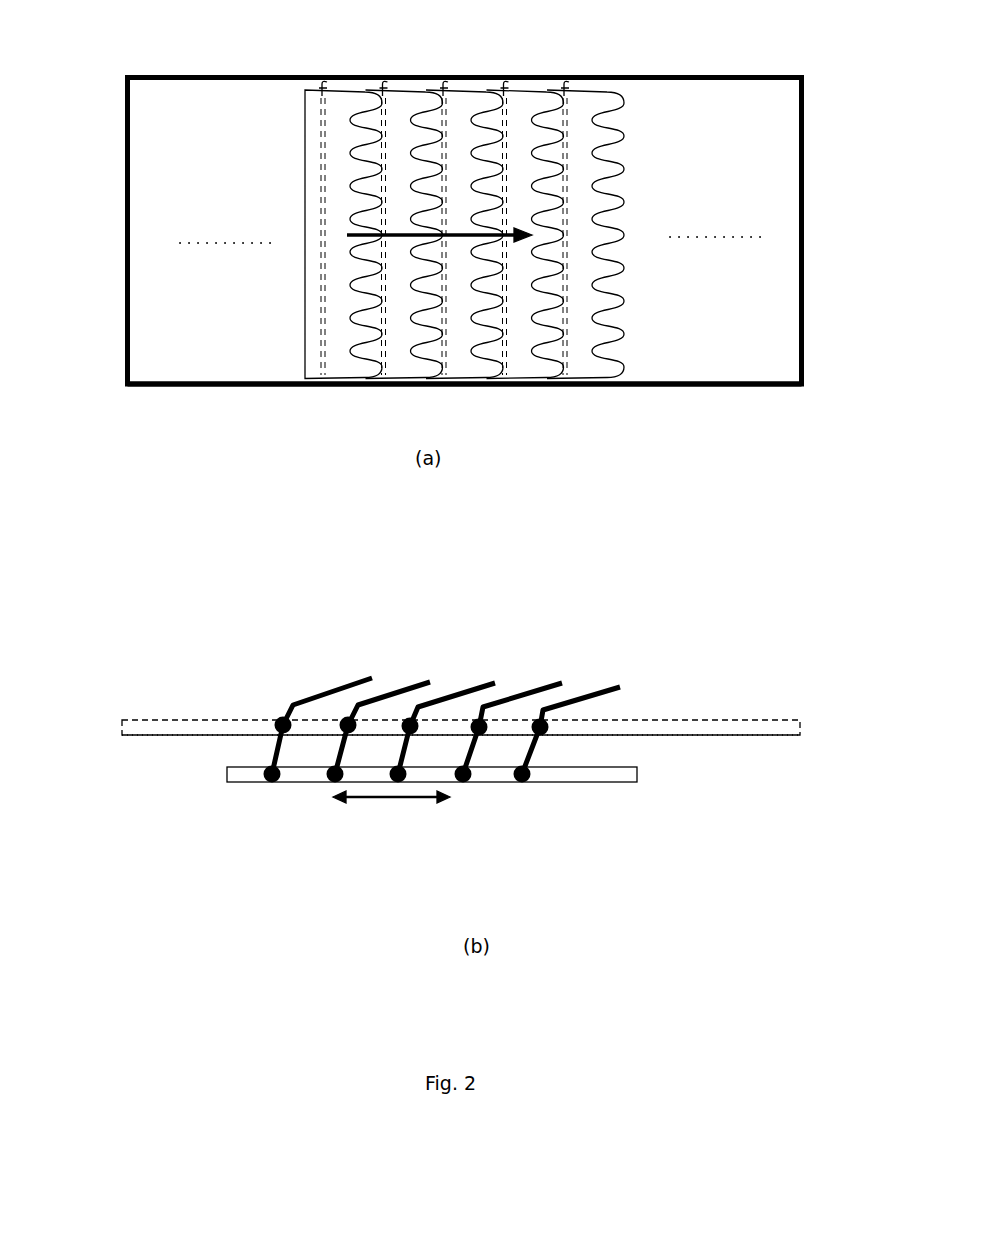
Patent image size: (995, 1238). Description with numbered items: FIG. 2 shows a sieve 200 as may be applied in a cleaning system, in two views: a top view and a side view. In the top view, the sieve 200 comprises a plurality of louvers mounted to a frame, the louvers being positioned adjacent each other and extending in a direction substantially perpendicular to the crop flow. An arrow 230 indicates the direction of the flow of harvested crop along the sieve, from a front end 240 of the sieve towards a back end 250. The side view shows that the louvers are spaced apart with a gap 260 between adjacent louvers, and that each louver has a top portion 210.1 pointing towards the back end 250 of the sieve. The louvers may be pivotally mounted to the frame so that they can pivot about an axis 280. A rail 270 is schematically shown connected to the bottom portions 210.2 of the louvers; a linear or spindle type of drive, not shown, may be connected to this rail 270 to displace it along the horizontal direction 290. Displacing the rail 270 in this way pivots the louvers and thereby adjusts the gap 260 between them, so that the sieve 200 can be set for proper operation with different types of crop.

The sieve 200 is at (141, 51).
The flow direction 230 is at (392, 235).
The front end 240 is at (125, 222).
The back end 250 is at (804, 193).
The gap 260 is at (427, 692).
The rail 270 is at (244, 773).
The axis 280 is at (283, 717).
The horizontal direction 290 is at (375, 800).
The top portion 210.1 is at (535, 692).
The bottom portion 210.2 is at (467, 753).